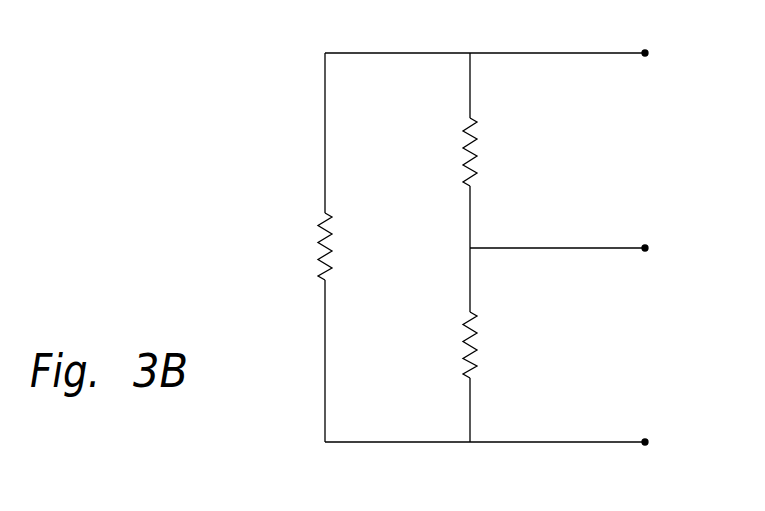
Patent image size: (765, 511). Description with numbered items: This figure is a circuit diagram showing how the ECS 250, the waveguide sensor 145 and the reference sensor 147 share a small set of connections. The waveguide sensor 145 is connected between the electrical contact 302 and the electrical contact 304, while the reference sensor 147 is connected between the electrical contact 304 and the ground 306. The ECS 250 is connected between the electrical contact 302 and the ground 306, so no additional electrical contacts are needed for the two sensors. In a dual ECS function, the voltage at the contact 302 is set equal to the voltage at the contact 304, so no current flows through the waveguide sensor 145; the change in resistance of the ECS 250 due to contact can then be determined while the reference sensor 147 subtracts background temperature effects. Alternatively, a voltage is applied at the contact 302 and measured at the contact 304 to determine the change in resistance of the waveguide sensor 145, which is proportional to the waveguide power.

The ECS 250 is at (318, 240).
The waveguide sensor 145 is at (470, 139).
The reference sensor 147 is at (470, 338).
The electrical contact 302 is at (645, 53).
The electrical contact 304 is at (645, 248).
The ground 306 is at (645, 442).